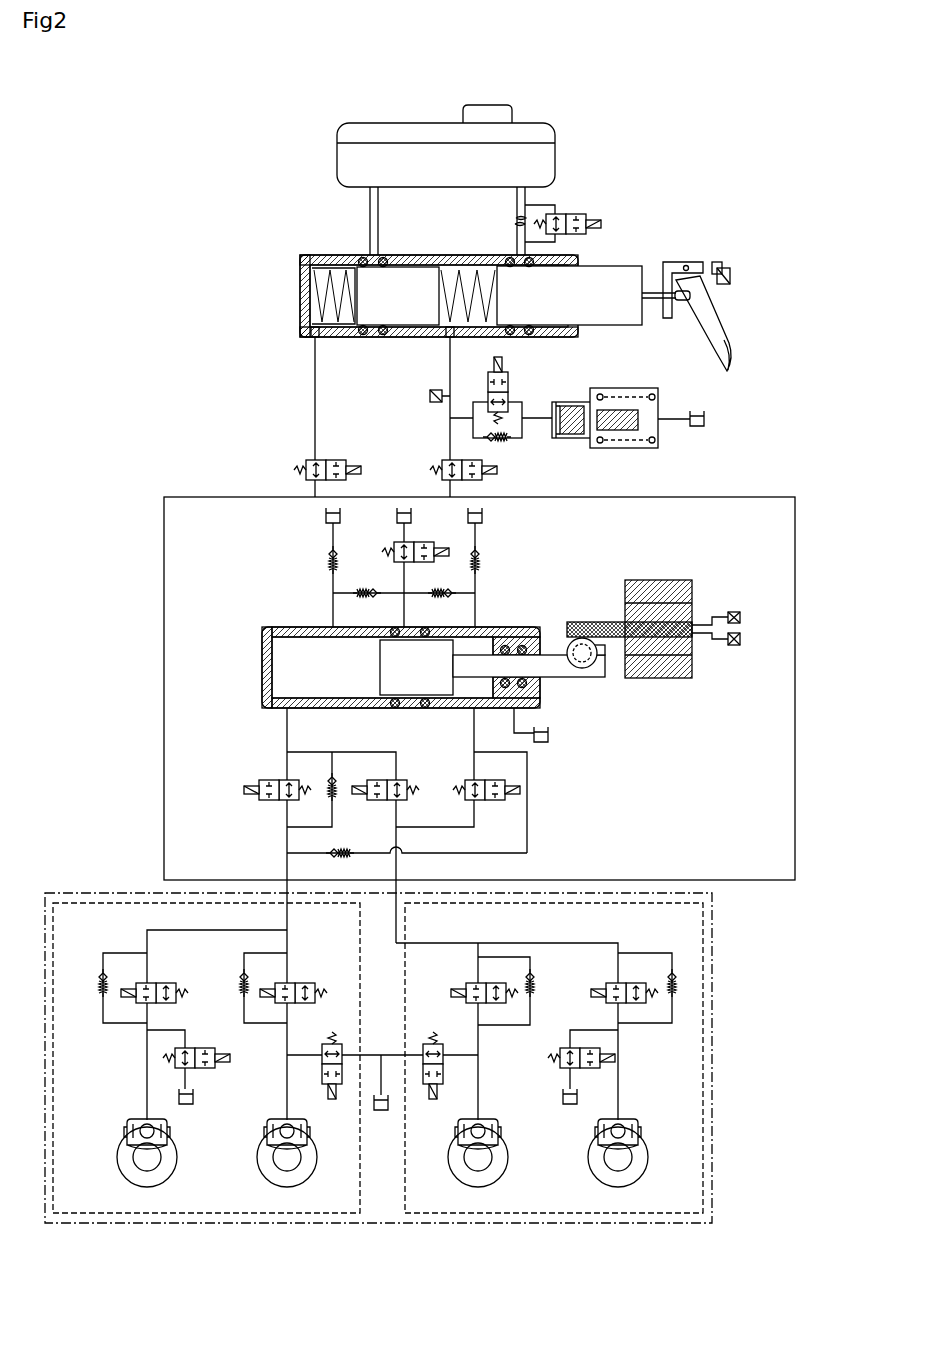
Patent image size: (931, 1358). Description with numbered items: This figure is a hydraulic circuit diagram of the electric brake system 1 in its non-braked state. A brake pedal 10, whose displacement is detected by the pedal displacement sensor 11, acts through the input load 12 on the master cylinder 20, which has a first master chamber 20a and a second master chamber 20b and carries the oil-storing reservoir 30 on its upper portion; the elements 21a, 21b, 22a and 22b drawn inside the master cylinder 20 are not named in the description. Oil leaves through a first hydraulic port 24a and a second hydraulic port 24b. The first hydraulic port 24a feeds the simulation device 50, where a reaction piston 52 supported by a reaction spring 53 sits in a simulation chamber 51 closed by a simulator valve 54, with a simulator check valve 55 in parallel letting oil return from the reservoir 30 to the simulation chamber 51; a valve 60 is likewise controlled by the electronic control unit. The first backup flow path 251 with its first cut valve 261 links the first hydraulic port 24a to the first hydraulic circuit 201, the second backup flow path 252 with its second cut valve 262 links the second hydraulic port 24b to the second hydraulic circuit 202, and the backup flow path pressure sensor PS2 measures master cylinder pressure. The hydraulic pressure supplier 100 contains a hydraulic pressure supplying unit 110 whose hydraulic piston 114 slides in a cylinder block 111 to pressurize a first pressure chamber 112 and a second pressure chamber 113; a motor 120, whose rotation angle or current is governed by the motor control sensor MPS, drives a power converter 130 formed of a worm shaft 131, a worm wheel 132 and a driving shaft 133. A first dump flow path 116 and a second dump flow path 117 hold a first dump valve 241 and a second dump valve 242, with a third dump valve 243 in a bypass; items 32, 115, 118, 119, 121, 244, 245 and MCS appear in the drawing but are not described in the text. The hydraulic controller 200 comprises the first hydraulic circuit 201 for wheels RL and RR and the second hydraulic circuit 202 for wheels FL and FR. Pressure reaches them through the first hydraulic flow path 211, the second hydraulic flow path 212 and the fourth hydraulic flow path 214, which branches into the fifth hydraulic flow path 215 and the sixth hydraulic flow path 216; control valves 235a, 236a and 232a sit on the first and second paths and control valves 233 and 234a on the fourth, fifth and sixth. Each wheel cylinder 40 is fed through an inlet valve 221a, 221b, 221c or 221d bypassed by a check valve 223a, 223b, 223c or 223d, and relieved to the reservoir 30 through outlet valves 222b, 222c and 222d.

The electric brake system 1 is at (308, 80).
The brake pedal 10 is at (707, 316).
The pedal displacement sensor 11 is at (726, 262).
The input load 12 is at (653, 290).
The master cylinder 20 is at (441, 293).
The first master chamber 20a is at (468, 267).
The second master chamber 20b is at (336, 267).
The first piston 21a is at (606, 268).
The second piston 21b is at (472, 328).
The first piston spring 22a is at (400, 273).
The second piston spring 22b is at (318, 300).
The first hydraulic port 24a is at (445, 336).
The second hydraulic port 24b is at (310, 337).
The reservoir 30 is at (379, 123).
The reservoir flow path 32 is at (325, 516).
The wheel cylinder 40 is at (170, 1131).
The simulation device 50 is at (570, 400).
The simulation chamber 51 is at (625, 387).
The reaction piston 52 is at (572, 401).
The reaction spring 53 is at (599, 387).
The simulator valve 54 is at (509, 380).
The simulator check valve 55 is at (502, 441).
The valve 60 is at (590, 212).
The hydraulic pressure supplier 100 is at (248, 579).
The hydraulic pressure supplying unit 110 is at (368, 672).
The cylinder block 111 is at (268, 649).
The first pressure chamber 112 is at (276, 676).
The second pressure chamber 113 is at (514, 712).
The hydraulic piston 114 is at (380, 655).
The sealing member 115 is at (380, 692).
The first dump flow path 116 is at (332, 610).
The second dump flow path 117 is at (476, 610).
The third hydraulic flow path 118 is at (408, 590).
The fourth hydraulic flow path 119 is at (405, 590).
The motor 120 is at (690, 580).
The motor housing / sensor connection 121 is at (692, 679).
The power converter 130 is at (617, 631).
The worm shaft 131 is at (585, 621).
The worm wheel 132 is at (600, 660).
The driving shaft 133 is at (590, 690).
The hydraulic controller 200 is at (330, 1268).
The first hydraulic circuit 201 is at (468, 1214).
The second hydraulic circuit 202 is at (318, 1214).
The first hydraulic flow path 211 is at (286, 731).
The second hydraulic flow path 212 is at (352, 752).
The fourth hydraulic flow path 214 is at (473, 732).
The fifth hydraulic flow path 215 is at (474, 767).
The sixth hydraulic flow path 216 is at (527, 770).
The inlet valve 221a is at (632, 982).
The inlet valve 221b is at (490, 982).
The inlet valve 221c is at (308, 982).
The inlet valve 221d is at (170, 982).
The outlet valve 222b is at (434, 1043).
The outlet valve 222c is at (334, 1045).
The outlet valve 222d is at (216, 1066).
The check valve 223a is at (680, 985).
The check valve 223b is at (532, 994).
The check valve 223c is at (244, 996).
The check valve 223d is at (103, 969).
The control valve 232a is at (342, 795).
The control valve 233 is at (496, 801).
The control valve 234a is at (328, 852).
The control valve 235a is at (410, 800).
The control valve 236a is at (258, 785).
The first dump valve 241 is at (330, 560).
The second dump valve 242 is at (478, 560).
The third dump valve 243 is at (355, 591).
The check valve 244 is at (451, 591).
The dump valve 245 is at (430, 542).
The first backup flow path 251 is at (450, 380).
The second backup flow path 252 is at (314, 378).
The first cut valve 261 is at (439, 464).
The second cut valve 262 is at (303, 470).
The backup flow path pressure sensor PS2 is at (430, 397).
The motor control sensor MPS is at (736, 610).
The motor current sensor MCS is at (738, 646).